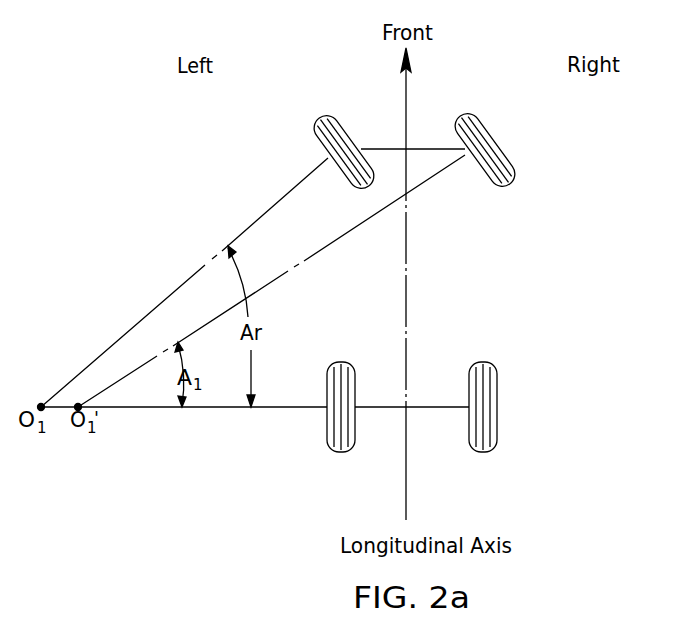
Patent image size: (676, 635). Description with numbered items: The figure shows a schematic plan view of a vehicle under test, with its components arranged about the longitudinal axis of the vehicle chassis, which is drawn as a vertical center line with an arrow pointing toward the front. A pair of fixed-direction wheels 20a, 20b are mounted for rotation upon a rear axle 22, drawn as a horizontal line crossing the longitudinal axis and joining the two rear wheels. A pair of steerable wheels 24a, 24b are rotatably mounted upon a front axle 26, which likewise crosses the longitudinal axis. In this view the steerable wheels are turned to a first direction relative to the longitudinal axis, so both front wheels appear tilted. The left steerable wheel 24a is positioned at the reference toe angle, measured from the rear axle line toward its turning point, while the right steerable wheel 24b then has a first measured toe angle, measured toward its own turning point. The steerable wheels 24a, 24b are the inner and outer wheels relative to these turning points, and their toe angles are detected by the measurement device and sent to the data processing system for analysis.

The fixed-direction wheel 20a is at (481, 452).
The fixed-direction wheel 20b is at (333, 452).
The rear axle 22 is at (435, 405).
The left steerable wheel 24a is at (327, 118).
The right steerable wheel 24b is at (480, 125).
The front axle 26 is at (387, 148).